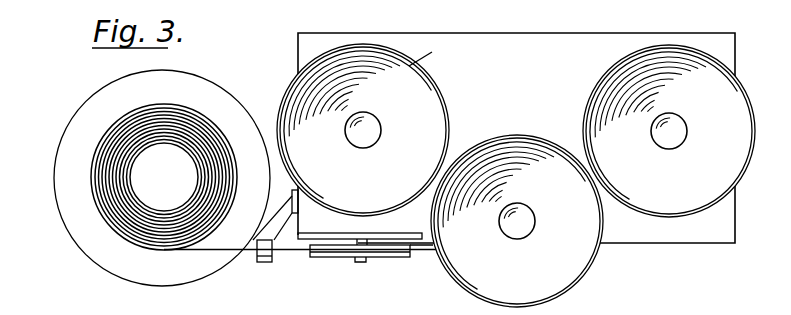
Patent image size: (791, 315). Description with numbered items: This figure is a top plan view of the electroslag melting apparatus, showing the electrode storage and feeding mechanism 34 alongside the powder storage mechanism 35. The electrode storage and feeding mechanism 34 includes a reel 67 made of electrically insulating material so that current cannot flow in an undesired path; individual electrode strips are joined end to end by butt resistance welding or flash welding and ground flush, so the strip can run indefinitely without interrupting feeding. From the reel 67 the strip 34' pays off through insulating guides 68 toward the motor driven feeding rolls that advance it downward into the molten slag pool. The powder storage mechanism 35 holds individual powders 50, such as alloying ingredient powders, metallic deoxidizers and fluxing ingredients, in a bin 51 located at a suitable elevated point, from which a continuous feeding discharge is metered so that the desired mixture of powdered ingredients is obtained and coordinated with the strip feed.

The electrode storage and feeding mechanism 34 is at (162, 190).
The tape 34' is at (300, 281).
The reel 67 is at (108, 226).
The insulating guides 68 is at (271, 262).
The powder storage mechanism 35 is at (529, 126).
The individual powders 50 is at (516, 175).
The bin 51 is at (434, 53).